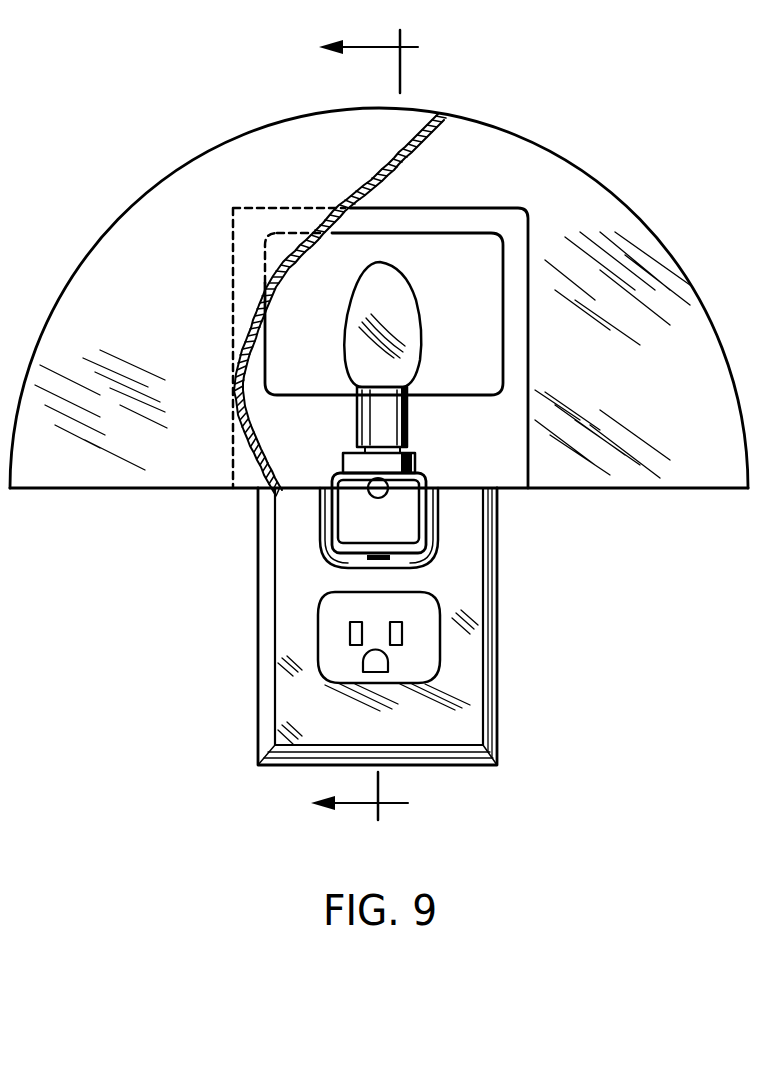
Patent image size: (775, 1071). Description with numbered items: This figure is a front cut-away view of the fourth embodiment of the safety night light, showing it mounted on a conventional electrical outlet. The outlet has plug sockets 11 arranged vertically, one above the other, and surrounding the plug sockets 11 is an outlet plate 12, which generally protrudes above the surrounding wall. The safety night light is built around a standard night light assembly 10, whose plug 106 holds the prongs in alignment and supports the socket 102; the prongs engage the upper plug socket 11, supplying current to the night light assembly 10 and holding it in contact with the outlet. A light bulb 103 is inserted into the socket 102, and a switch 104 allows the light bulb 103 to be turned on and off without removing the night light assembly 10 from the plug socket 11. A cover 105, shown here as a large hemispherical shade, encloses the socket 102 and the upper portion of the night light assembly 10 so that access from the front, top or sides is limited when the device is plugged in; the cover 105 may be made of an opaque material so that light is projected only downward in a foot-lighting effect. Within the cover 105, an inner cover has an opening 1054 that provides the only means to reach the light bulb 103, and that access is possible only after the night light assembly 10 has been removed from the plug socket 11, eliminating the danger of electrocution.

The night light assembly 10 is at (340, 425).
The plug socket 11 is at (407, 557).
The outlet plate 12 is at (558, 715).
The socket 102 is at (407, 435).
The light bulb 103 is at (387, 278).
The switch 104 is at (388, 485).
The cover 105 is at (137, 298).
The plug 106 is at (335, 520).
The opening 1054 is at (458, 290).